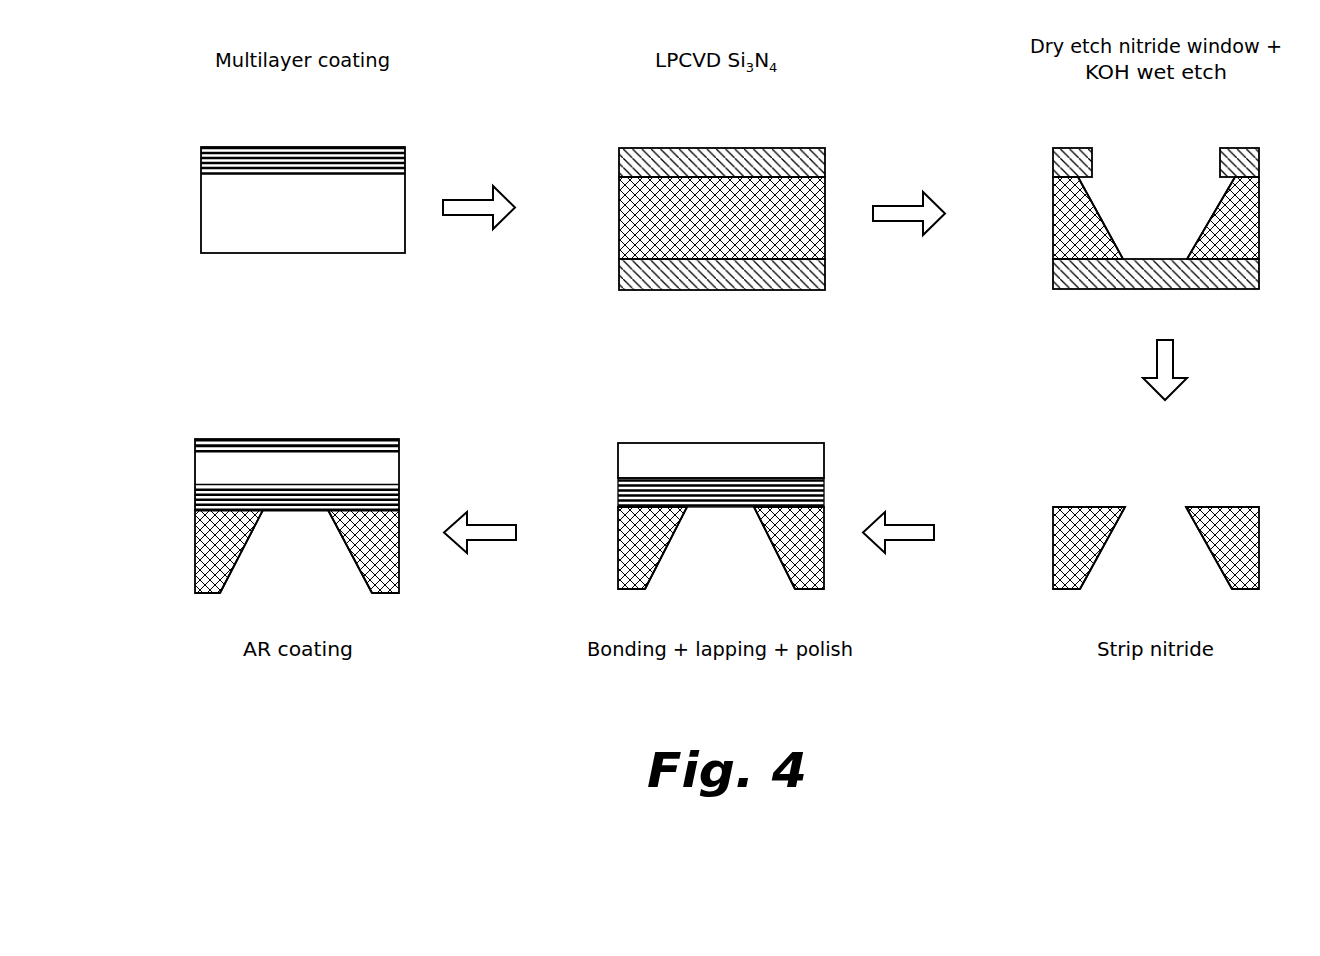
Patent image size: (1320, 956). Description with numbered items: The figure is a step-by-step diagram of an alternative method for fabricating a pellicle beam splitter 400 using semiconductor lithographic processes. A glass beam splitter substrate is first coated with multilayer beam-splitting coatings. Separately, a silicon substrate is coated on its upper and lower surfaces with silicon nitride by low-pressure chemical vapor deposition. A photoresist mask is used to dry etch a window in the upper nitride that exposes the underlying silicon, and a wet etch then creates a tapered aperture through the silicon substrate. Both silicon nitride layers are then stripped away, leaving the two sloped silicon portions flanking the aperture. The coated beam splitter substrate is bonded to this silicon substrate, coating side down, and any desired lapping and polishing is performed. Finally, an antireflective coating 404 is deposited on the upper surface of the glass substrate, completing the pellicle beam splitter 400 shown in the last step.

The pellicle beam splitter 400 is at (281, 499).
The antireflective coating 404 is at (195, 447).